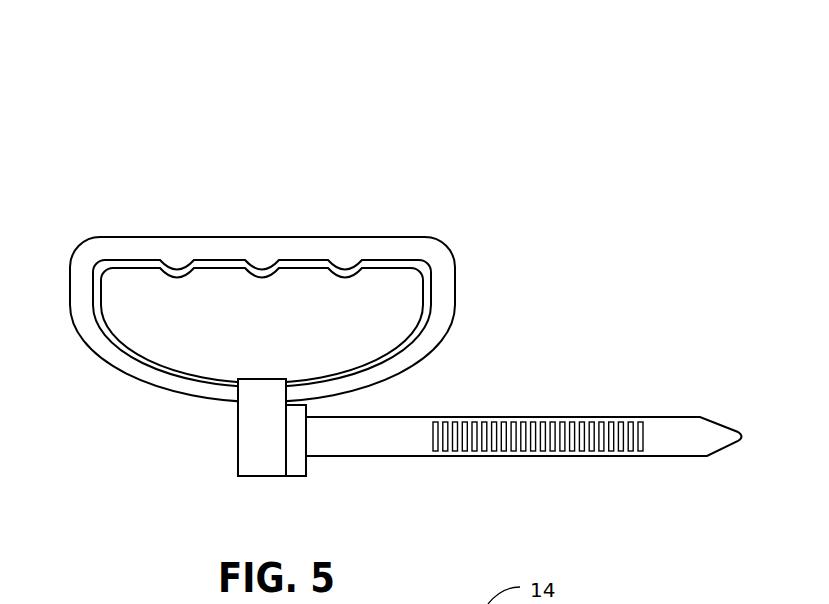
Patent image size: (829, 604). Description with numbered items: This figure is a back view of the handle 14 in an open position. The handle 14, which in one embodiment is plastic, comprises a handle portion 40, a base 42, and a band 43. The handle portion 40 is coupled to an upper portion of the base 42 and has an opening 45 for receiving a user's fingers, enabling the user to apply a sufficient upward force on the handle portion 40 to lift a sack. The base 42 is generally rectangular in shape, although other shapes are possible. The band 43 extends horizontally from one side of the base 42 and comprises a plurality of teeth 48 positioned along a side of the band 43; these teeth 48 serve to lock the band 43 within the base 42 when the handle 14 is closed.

The handle 14 is at (342, 78).
The handle portion 40 is at (263, 243).
The base 42 is at (253, 449).
The band 43 is at (665, 440).
The opening 45 is at (272, 336).
The teeth 48 is at (581, 423).